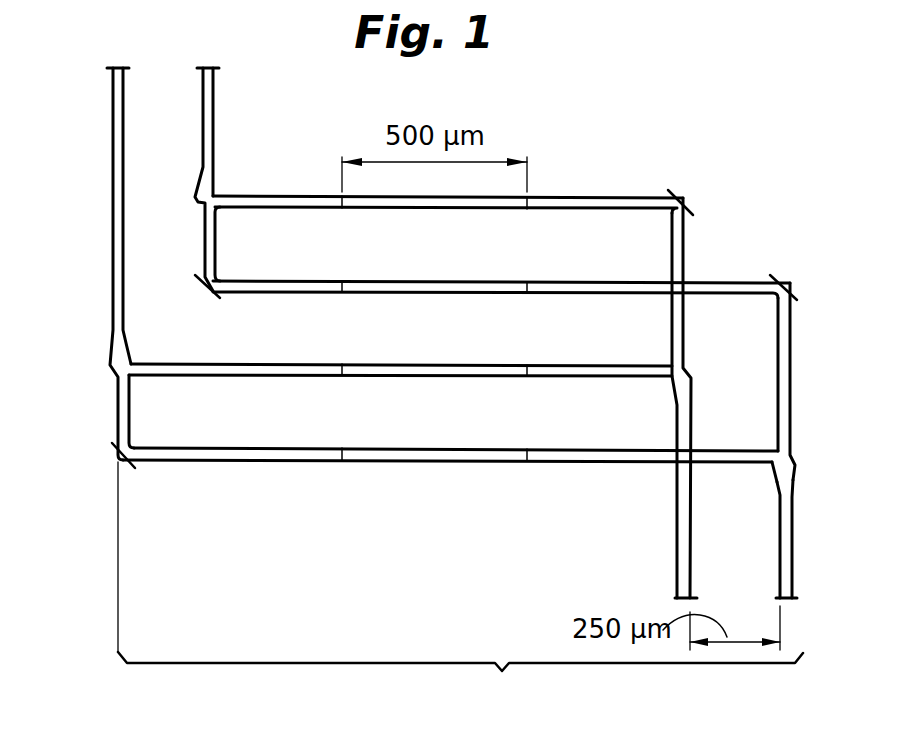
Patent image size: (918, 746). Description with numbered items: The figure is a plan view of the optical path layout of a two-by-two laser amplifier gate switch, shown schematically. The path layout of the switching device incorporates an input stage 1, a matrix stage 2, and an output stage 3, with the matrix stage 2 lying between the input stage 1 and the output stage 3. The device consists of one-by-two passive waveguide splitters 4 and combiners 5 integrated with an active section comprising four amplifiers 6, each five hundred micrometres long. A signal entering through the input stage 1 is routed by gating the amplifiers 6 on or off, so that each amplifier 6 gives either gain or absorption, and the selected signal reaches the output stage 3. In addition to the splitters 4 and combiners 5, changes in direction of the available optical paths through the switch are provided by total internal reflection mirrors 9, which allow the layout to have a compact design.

The input stage 1 is at (100, 133).
The matrix stage 2 is at (460, 583).
The output stage 3 is at (806, 561).
The passive waveguide splitter 4 is at (211, 190).
The passive waveguide combiner 5 is at (797, 466).
The amplifier 6 is at (480, 209).
The total internal reflection mirror 9 is at (777, 280).